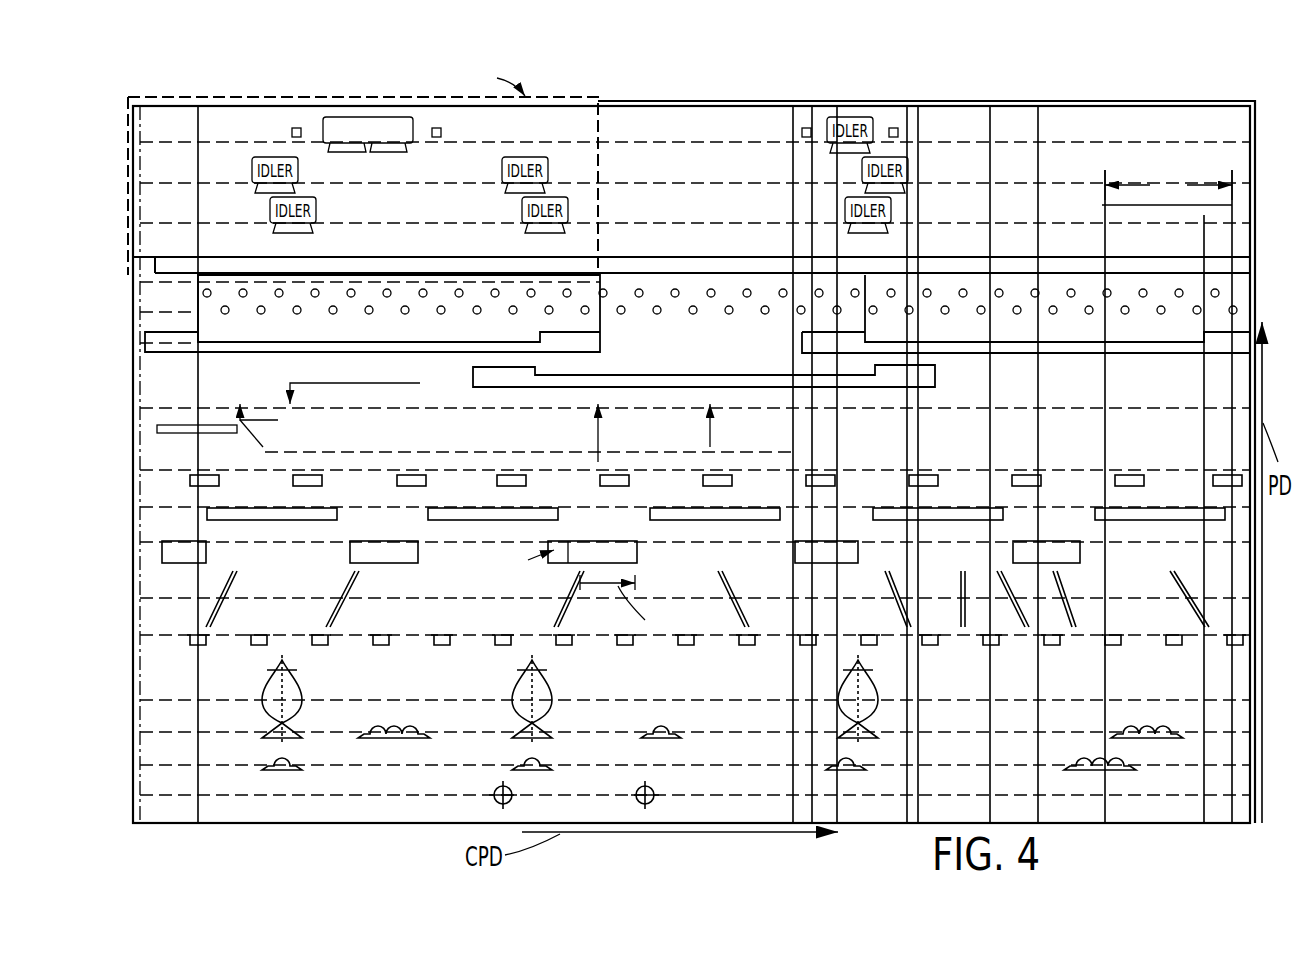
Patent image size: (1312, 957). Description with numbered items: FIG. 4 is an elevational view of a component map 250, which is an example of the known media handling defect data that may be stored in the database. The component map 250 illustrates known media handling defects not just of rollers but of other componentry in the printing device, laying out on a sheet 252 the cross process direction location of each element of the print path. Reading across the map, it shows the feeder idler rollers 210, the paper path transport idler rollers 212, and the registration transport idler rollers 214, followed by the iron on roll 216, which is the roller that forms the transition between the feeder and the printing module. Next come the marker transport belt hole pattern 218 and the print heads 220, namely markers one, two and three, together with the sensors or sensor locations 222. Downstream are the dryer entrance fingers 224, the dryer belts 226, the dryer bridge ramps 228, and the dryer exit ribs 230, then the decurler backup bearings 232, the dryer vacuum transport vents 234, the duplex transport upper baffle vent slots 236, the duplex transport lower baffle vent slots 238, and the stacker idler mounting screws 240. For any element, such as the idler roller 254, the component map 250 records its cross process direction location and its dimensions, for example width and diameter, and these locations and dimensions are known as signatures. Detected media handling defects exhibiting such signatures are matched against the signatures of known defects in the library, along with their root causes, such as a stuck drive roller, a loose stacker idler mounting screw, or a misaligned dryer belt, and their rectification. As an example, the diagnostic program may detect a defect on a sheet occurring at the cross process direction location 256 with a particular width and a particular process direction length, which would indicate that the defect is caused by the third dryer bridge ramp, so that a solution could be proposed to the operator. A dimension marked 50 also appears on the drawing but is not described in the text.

The feeder idler rollers 210 is at (173, 130).
The paper path transport idler rollers 212 is at (173, 172).
The registration transport idler rollers 214 is at (173, 209).
The iron on roll 216 is at (153, 271).
The marker transport belt hole pattern 218 is at (173, 302).
The print heads 220 is at (148, 333).
The sensors or sensor locations 222 is at (173, 382).
The dryer entrance fingers 224 is at (173, 492).
The dryer belts 226 is at (173, 528).
The dryer bridge ramps 228 is at (155, 558).
The dryer exit ribs 230 is at (173, 618).
The decurler backup bearings 232 is at (173, 640).
The dryer vacuum transport vents 234 is at (250, 683).
The duplex transport upper baffle vent slots 236 is at (258, 728).
The duplex transport lower baffle vent slots 238 is at (255, 770).
The stacker idler mounting screws 240 is at (270, 808).
The component map 250 is at (228, 92).
The sheet 252 is at (715, 112).
The idler roller 254 is at (298, 170).
The cross process direction location 256 is at (637, 553).
The dimension 50 is at (1167, 187).